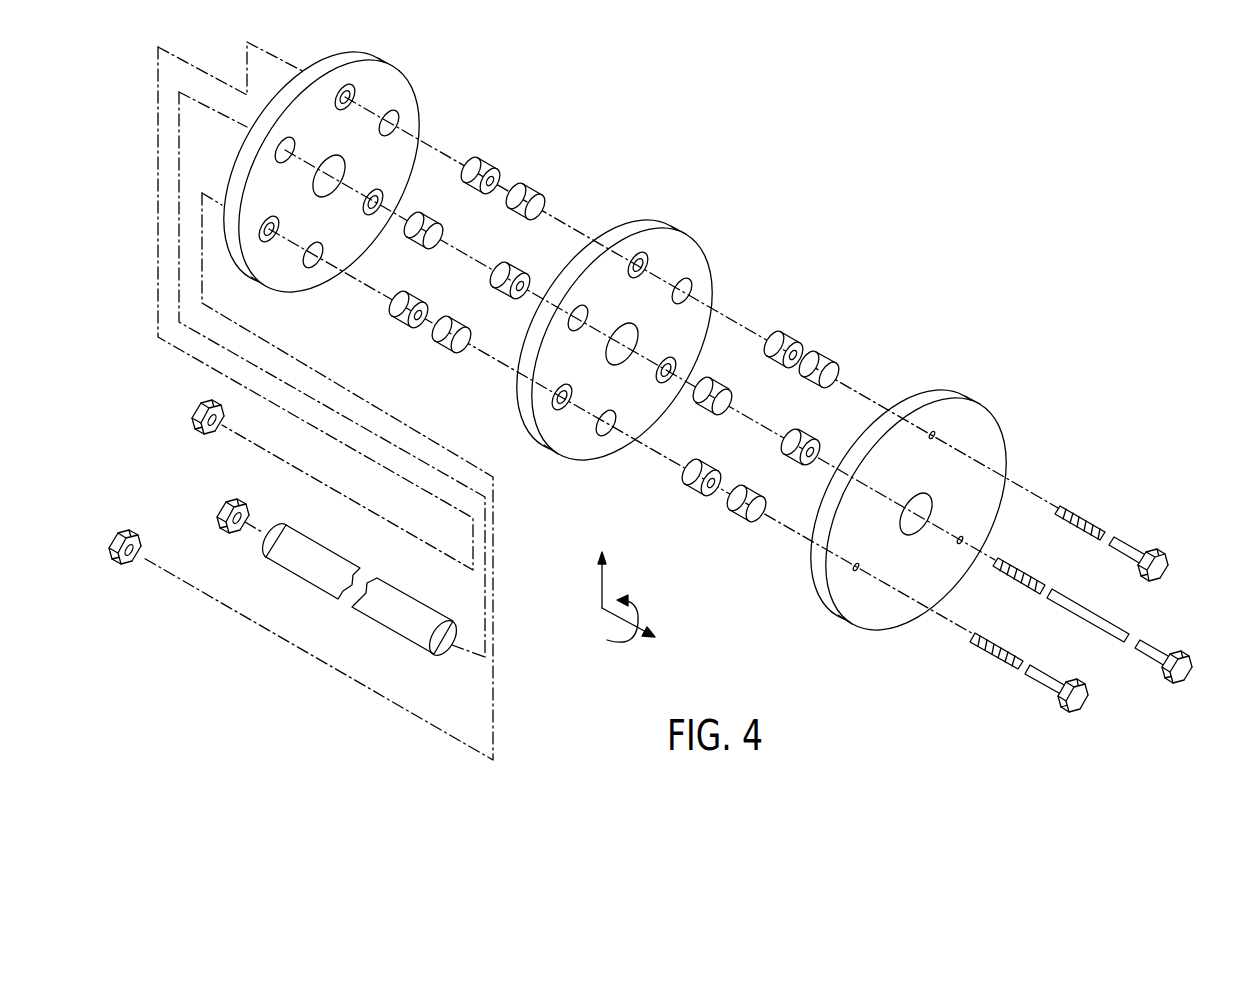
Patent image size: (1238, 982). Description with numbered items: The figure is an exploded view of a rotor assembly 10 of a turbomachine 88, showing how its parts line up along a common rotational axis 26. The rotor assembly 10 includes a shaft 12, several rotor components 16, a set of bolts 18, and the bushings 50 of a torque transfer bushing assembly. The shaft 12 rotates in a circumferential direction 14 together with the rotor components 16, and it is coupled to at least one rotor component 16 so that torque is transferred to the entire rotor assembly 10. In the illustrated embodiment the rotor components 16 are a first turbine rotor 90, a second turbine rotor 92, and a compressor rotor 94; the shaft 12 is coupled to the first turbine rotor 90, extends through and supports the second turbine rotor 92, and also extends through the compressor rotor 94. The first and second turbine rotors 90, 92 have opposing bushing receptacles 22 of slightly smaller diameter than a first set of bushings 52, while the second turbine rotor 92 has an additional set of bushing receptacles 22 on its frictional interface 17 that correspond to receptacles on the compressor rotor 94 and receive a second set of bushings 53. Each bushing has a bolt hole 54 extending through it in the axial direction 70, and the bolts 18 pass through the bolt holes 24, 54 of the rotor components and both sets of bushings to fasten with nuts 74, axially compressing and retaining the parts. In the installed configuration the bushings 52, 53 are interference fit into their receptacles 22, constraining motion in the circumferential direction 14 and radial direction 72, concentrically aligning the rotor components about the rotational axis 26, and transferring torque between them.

The rotor assembly 10 is at (810, 83).
The shaft 12 is at (410, 605).
The circumferential direction 14 is at (633, 643).
The rotor component 16 is at (258, 282).
The frictional interface 17 is at (258, 258).
The bolt 18 is at (1190, 665).
The bushing receptacle 22 is at (352, 88).
The bolt hole 24 is at (340, 90).
The common rotational axis 26 is at (474, 660).
The bushing 50 is at (488, 168).
The first set of bushings 52 is at (805, 348).
The second set of bushings 53 is at (503, 176).
The bolt hole 54 is at (491, 187).
The axial direction 70 is at (605, 615).
The radial direction 72 is at (602, 583).
The nut 74 is at (193, 415).
The turbomachine 88 is at (781, 226).
The first turbine rotor 90 is at (866, 633).
The second turbine rotor 92 is at (578, 463).
The compressor rotor 94 is at (282, 295).